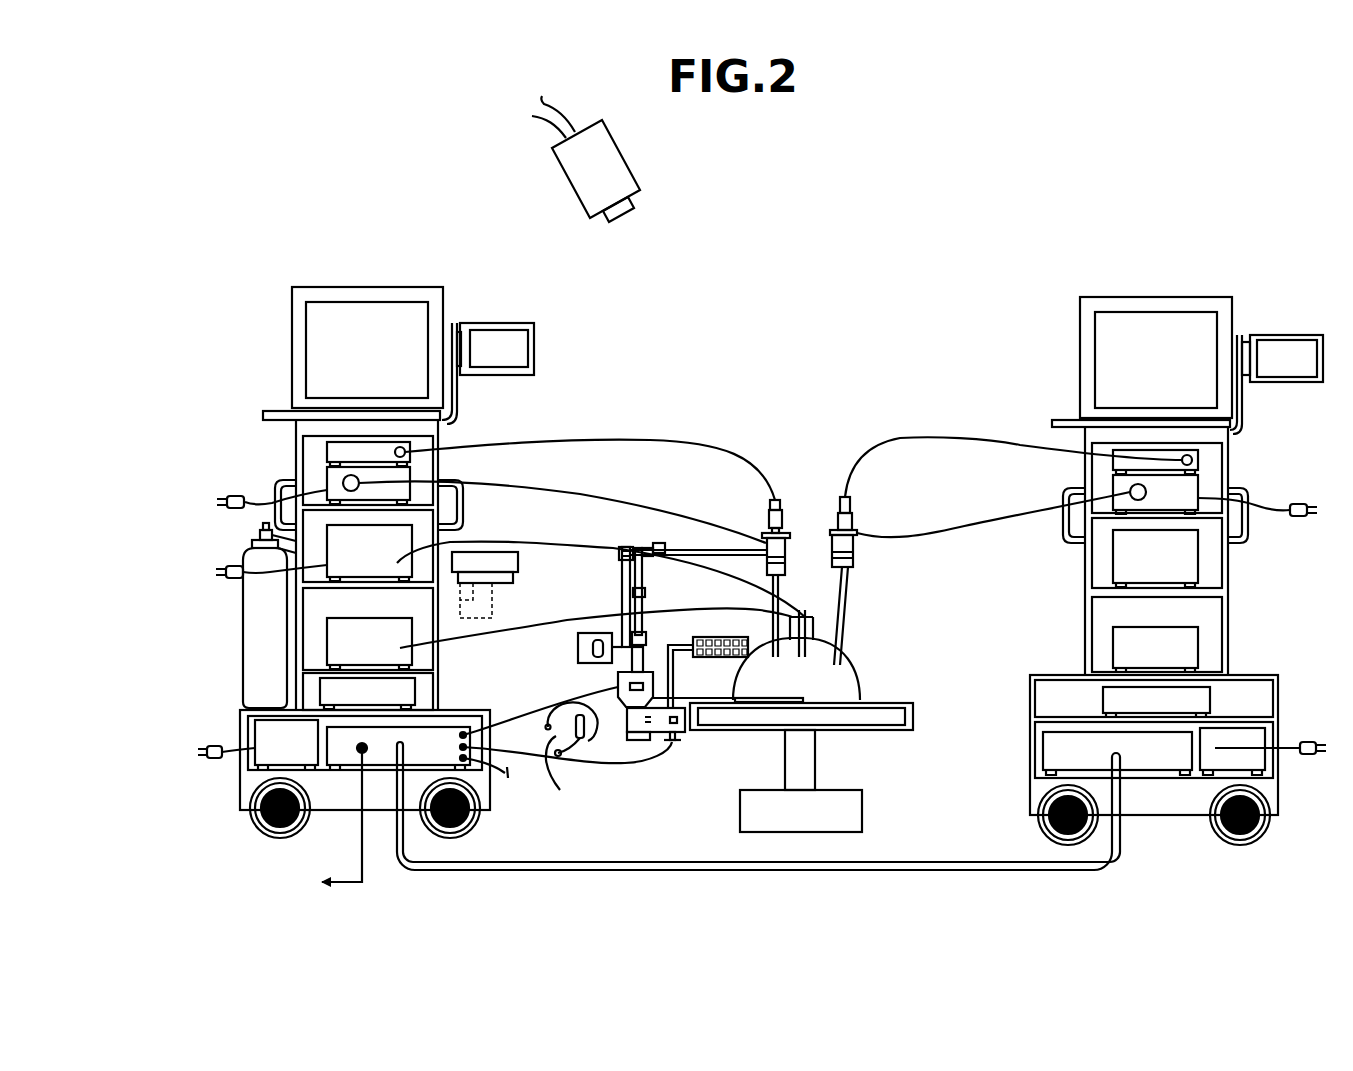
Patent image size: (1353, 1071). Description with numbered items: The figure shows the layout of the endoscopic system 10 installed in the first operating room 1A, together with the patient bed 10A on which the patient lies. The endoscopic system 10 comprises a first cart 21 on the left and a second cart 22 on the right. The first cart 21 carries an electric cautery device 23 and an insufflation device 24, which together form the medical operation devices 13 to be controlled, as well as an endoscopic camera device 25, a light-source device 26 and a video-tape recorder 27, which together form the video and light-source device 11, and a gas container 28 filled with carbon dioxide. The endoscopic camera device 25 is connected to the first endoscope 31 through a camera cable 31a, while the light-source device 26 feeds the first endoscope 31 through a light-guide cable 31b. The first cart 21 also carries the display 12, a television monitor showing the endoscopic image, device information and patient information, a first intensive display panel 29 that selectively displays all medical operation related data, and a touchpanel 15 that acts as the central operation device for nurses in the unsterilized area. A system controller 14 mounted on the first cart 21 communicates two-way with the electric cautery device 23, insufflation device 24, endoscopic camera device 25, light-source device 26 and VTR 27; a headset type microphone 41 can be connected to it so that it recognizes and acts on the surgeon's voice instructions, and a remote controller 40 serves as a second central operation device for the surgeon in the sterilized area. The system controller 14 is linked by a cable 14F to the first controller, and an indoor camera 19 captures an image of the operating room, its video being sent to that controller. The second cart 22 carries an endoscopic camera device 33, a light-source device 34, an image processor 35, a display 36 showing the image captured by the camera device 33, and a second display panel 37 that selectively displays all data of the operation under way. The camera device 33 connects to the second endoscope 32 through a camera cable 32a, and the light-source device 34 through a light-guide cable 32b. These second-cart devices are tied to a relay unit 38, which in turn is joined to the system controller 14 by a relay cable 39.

The first operating room 1A is at (864, 178).
The endoscopic system 10 is at (786, 275).
The patient bed 10A is at (880, 725).
The video and light-source device 11 is at (296, 464).
The display 12 is at (325, 350).
The medical operation devices 13 is at (468, 599).
The system controller 14 is at (467, 763).
The cable 14F is at (345, 882).
The touchpanel 15 is at (520, 565).
The indoor camera 19 is at (615, 162).
The first cart 21 is at (248, 782).
The second cart 22 is at (1180, 800).
The electric cautery device 23 is at (330, 565).
The insufflation device 24 is at (330, 650).
The endoscopic camera device 25 is at (330, 452).
The light-source device 26 is at (330, 485).
The video-tape recorder 27 is at (318, 690).
The gas container 28 is at (250, 618).
The first intensive display panel 29 is at (522, 323).
The first endoscope 31 is at (766, 536).
The camera cable 31a is at (645, 437).
The light-guide cable 31b is at (605, 500).
The second endoscope 32 is at (855, 533).
The camera cable 32a is at (925, 437).
The light-guide cable 32b is at (958, 526).
The endoscopic camera device 33 is at (1193, 460).
The light-source device 34 is at (1200, 493).
The image processor 35 is at (1210, 700).
The display 36 is at (1147, 330).
The second display panel 37 is at (1282, 348).
The relay unit 38 is at (1140, 760).
The relay cable 39 is at (815, 872).
The remote controller 40 is at (702, 637).
The headset type microphone 41 is at (560, 790).